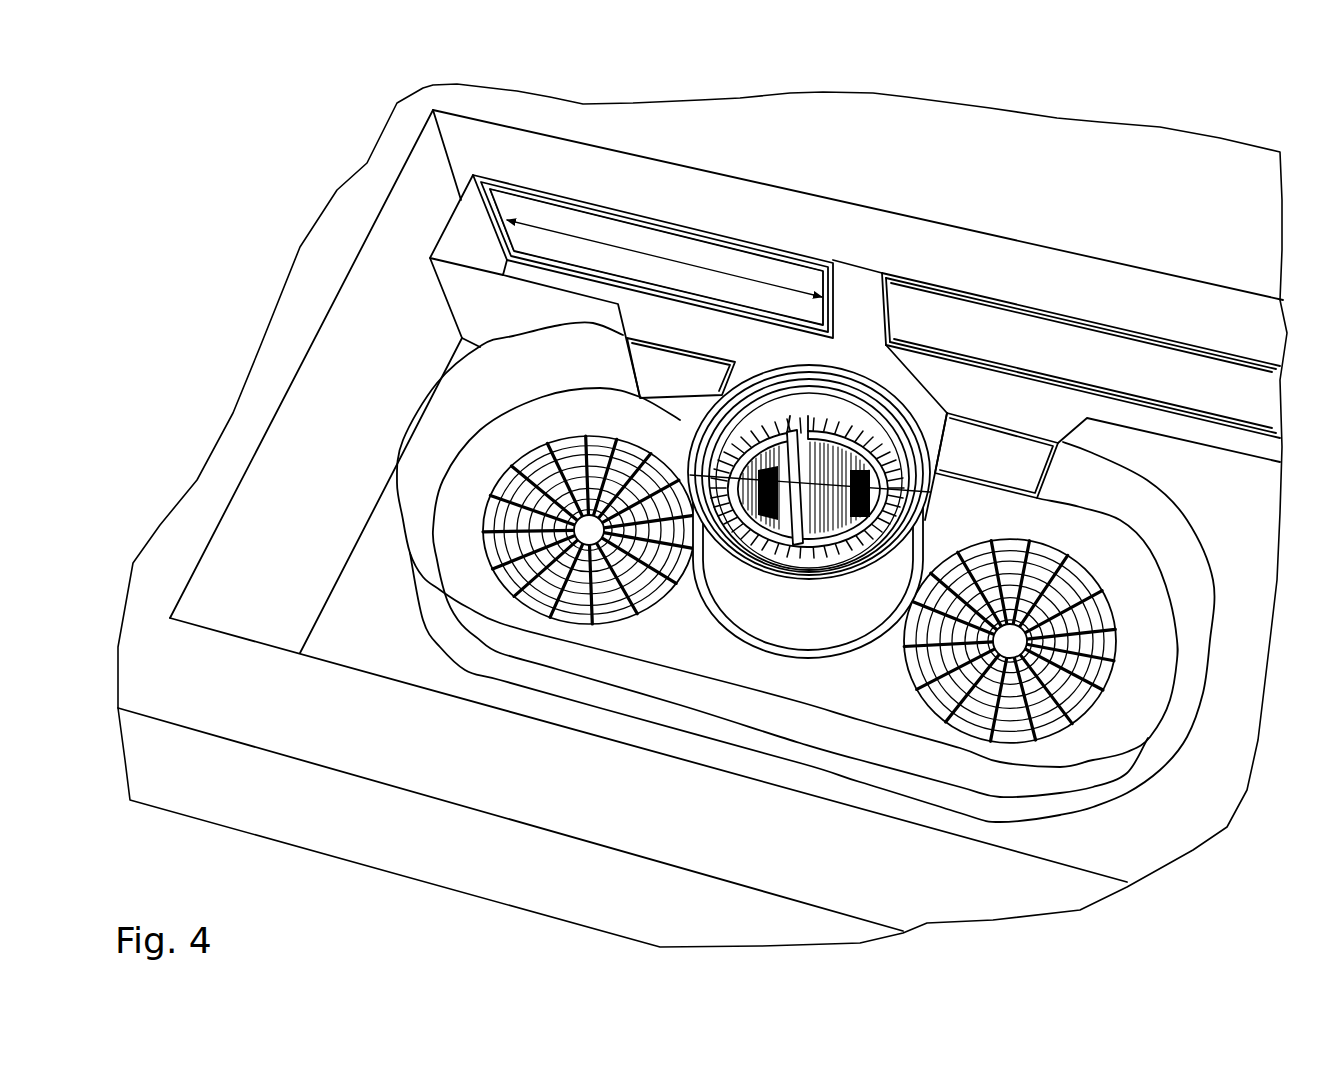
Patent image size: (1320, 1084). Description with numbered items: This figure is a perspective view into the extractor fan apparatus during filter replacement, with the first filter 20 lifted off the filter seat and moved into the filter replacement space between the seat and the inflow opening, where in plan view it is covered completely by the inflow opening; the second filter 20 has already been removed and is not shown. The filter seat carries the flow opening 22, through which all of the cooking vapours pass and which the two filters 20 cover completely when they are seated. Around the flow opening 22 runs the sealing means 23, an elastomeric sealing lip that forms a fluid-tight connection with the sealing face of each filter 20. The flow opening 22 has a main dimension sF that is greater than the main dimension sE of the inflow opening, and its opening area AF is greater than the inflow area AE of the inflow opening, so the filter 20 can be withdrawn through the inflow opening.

The opening area AF is at (556, 220).
The sealing means 23 is at (637, 217).
The main dimension sF is at (733, 273).
The inflow area AE is at (852, 420).
The main dimension sE is at (880, 440).
The flow opening 22 is at (943, 320).
The filter 20 is at (893, 447).